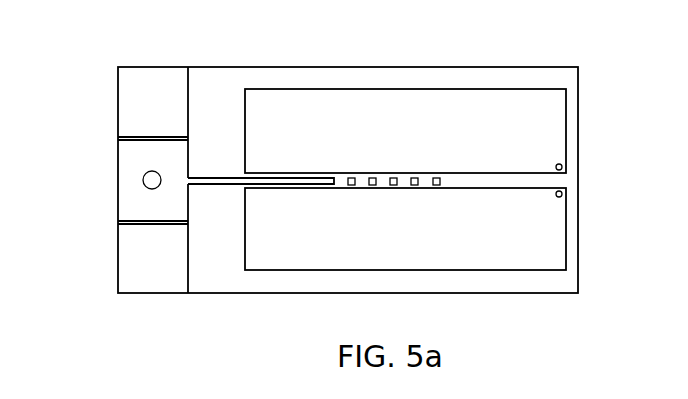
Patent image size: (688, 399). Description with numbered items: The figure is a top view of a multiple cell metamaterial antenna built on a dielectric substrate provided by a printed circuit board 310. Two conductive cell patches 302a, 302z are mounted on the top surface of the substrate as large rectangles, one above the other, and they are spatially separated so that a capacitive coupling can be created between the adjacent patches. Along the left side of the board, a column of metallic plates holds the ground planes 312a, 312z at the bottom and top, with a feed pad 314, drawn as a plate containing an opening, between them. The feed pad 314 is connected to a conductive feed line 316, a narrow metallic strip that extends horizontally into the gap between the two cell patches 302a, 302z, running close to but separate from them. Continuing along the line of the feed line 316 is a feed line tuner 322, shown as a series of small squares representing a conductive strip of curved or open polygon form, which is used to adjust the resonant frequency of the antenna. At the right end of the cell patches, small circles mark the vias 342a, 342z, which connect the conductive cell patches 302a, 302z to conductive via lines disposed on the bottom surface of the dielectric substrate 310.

The printed circuit board 310 is at (565, 79).
The ground plane 312a is at (143, 257).
The ground plane 312z is at (150, 95).
The feed pad 314 is at (165, 160).
The conductive feed line 316 is at (226, 181).
The feed line tuner 322 is at (395, 177).
The conductive cell patch 302a is at (472, 117).
The conductive cell patch 302z is at (480, 247).
The via 342a is at (563, 167).
The via 342z is at (563, 194).